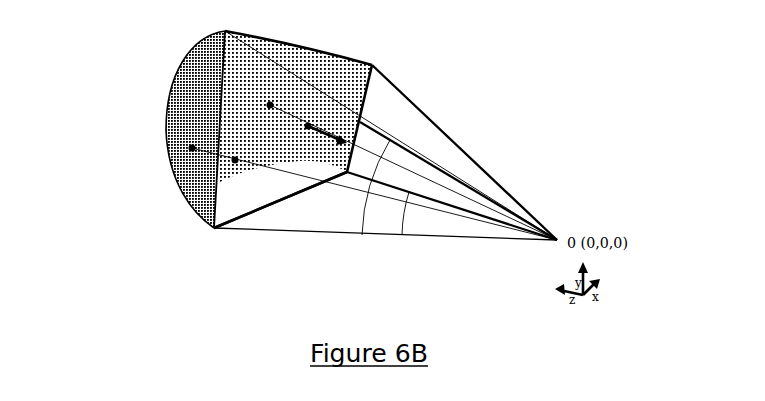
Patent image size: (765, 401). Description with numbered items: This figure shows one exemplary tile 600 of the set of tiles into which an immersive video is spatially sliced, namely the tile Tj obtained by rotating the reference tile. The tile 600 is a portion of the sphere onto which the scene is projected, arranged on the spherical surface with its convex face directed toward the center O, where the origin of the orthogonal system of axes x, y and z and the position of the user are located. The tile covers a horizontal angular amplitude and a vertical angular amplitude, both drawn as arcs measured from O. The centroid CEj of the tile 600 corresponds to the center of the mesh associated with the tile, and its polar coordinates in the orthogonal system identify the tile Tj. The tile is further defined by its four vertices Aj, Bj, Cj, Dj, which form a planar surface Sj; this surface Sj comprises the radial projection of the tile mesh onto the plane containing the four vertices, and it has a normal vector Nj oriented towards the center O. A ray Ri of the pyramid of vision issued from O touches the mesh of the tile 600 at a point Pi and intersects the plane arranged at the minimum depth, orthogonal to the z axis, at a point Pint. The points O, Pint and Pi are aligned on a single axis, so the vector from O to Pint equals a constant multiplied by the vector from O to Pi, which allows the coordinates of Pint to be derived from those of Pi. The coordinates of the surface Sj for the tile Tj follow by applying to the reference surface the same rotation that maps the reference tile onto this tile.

The tile 600 is at (168, 115).
The tile Tj is at (243, 132).
The vertex Aj is at (227, 119).
The vertex Bj is at (305, 48).
The vertex Cj is at (358, 133).
The vertex Dj is at (187, 212).
The surface Sj is at (303, 197).
The ray Ri is at (477, 223).
The point Pi is at (371, 182).
The intersection point Pint is at (247, 154).
The centroid CEj is at (407, 163).
The normal vector Nj is at (324, 141).